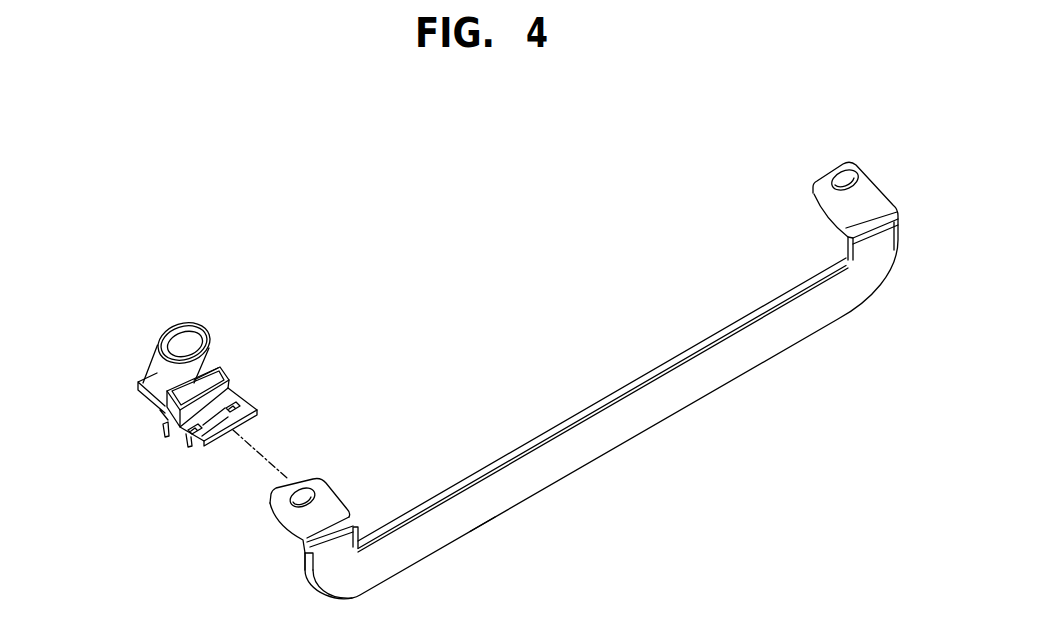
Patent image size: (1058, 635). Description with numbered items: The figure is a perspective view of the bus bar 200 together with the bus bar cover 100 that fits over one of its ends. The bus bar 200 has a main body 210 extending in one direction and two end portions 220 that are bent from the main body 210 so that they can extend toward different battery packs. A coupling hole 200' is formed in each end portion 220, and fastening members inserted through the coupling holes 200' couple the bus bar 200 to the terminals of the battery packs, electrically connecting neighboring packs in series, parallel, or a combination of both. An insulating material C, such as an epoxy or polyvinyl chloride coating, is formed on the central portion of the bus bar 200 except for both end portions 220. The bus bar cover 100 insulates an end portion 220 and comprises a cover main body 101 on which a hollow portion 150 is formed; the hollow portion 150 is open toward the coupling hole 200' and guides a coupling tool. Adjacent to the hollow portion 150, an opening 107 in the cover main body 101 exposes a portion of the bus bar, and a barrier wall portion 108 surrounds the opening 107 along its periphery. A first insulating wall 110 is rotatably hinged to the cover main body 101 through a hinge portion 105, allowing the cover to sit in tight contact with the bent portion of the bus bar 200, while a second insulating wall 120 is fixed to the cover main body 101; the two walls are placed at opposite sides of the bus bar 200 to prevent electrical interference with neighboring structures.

The bus bar cover 100 is at (162, 393).
The cover main body 101 is at (138, 389).
The hinge portion 105 is at (234, 398).
The opening 107 is at (177, 397).
The barrier wall portion 108 is at (218, 365).
The first insulating wall 110 is at (212, 446).
The second insulating wall 120 is at (166, 438).
The hollow portion 150 is at (180, 323).
The bus bar 200 is at (585, 361).
The coupling hole 200' is at (295, 442).
The main body 210 is at (661, 362).
The end portion 220 is at (325, 494).
The insulating material C is at (482, 523).